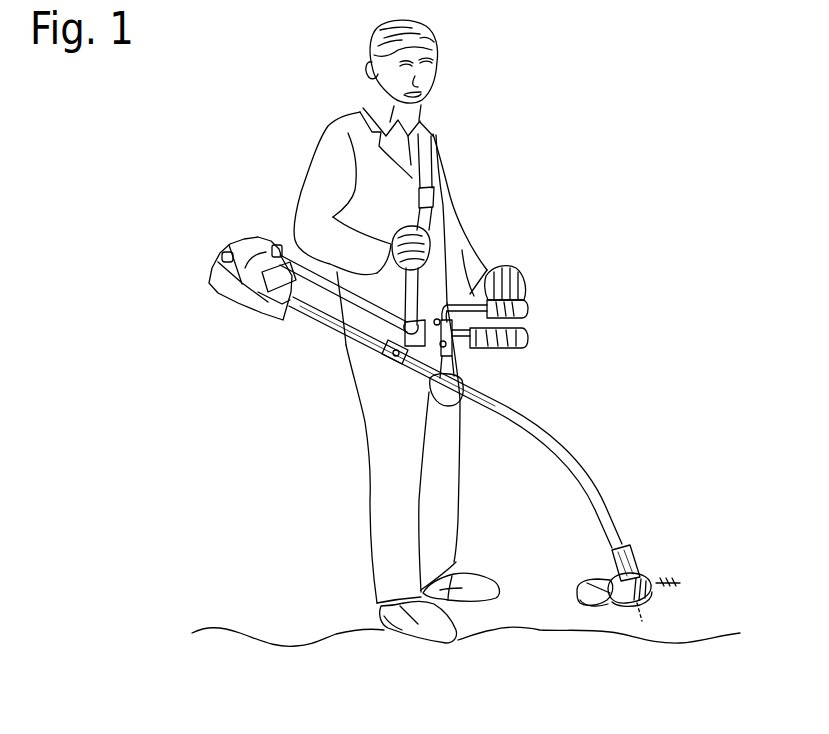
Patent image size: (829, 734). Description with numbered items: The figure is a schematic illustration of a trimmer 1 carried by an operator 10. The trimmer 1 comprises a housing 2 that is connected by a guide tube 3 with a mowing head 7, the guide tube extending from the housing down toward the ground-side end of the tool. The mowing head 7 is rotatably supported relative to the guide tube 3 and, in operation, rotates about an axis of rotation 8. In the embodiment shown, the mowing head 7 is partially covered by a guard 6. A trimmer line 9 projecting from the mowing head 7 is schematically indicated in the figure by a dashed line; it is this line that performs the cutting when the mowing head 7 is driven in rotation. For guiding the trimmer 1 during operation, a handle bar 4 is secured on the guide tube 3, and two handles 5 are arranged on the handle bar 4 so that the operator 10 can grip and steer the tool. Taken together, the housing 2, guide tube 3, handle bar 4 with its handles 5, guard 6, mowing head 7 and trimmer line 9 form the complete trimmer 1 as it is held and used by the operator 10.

The trimmer 1 is at (638, 422).
The housing 2 is at (242, 290).
The guide tube 3 is at (546, 428).
The handle bar 4 is at (474, 298).
The handles 5 is at (516, 328).
The guard 6 is at (590, 586).
The mowing head 7 is at (652, 592).
The axis of rotation 8 is at (641, 620).
The trimmer line 9 is at (678, 583).
The operator 10 is at (330, 106).